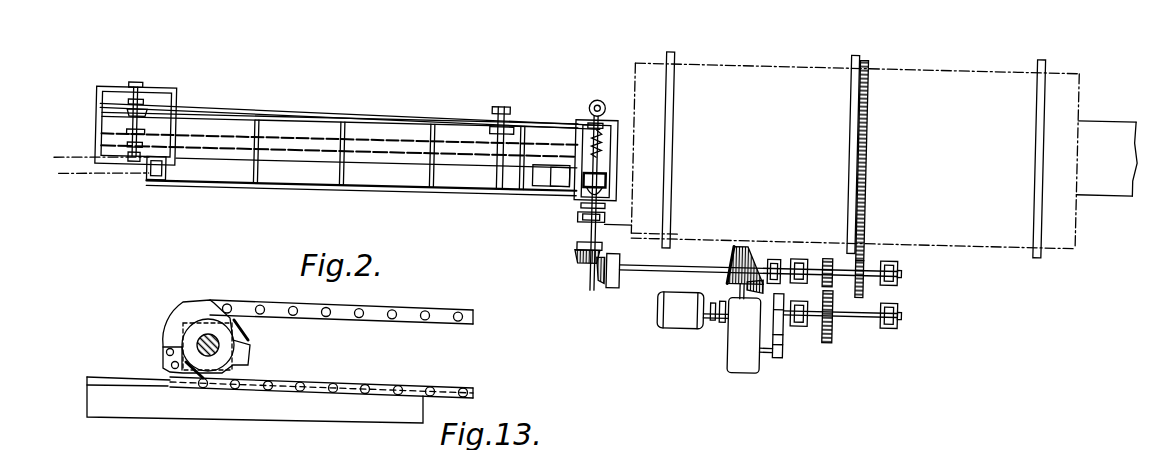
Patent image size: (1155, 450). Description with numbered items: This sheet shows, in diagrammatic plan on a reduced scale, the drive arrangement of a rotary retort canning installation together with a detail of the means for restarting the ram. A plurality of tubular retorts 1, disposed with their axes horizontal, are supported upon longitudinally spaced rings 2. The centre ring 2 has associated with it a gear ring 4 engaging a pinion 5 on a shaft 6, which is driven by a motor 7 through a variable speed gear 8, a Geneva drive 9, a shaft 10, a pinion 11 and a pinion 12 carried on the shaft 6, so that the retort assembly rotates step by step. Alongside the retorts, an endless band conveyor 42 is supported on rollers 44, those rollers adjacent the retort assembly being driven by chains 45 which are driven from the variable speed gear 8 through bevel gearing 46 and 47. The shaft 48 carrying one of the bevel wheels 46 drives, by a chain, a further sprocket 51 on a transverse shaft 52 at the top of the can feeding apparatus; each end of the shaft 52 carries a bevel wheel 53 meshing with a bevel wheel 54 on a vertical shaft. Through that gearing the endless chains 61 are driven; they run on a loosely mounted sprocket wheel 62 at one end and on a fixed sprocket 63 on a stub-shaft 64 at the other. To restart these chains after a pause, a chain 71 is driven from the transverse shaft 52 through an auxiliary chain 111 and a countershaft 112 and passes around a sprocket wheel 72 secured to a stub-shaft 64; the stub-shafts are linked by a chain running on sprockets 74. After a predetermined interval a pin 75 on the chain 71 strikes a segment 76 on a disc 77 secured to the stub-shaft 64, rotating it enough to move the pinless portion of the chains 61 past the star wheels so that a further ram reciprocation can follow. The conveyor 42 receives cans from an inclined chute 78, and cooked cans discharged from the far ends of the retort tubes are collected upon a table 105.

In FIG. 2, the tubular retort 1 is at (737, 61).
In FIG. 2, the ring 2 is at (674, 41).
In FIG. 2, the gear ring 4 is at (868, 45).
In FIG. 2, the pinion 5 is at (867, 271).
In FIG. 2, the shaft 6 is at (848, 254).
In FIG. 2, the motor 7 is at (675, 305).
In FIG. 2, the variable speed gear 8 is at (735, 337).
In FIG. 2, the Geneva drive 9 is at (784, 326).
In FIG. 2, the shaft 10 is at (869, 301).
In FIG. 2, the pinion 11 is at (826, 327).
In FIG. 2, the pinion 12 is at (828, 256).
In FIG. 2, the endless band conveyor 42 is at (305, 167).
In FIG. 2, the roller 44 is at (150, 181).
In FIG. 2, the chain 45 is at (557, 191).
In FIG. 2, the bevel wheel 46 is at (593, 265).
In FIG. 2, the bevel wheel 47 is at (745, 236).
In FIG. 2, the shaft 48 is at (672, 150).
In FIG. 2, the sprocket 51 is at (610, 194).
In FIG. 2, the transverse shaft 52 is at (603, 121).
In FIG. 2, the bevel wheel 53 is at (610, 167).
In FIG. 2, the bevel wheel 54 is at (580, 190).
In FIG. 2, the endless chain 61 is at (382, 138).
In FIG. 2, the sprocket wheel 62 is at (590, 133).
In FIG. 2, the sprocket 63 is at (160, 141).
In FIG. 2, the stub-shaft 64 is at (132, 123).
In FIG. 13, the stub-shaft 64 is at (200, 338).
In FIG. 2, the chain 71 is at (322, 106).
In FIG. 13, the chain 71 is at (441, 313).
In FIG. 2, the sprocket wheel 72 is at (128, 101).
In FIG. 13, the sprocket wheel 72 is at (237, 335).
In FIG. 2, the sprocket 74 is at (132, 118).
In FIG. 2, the pin 75 is at (240, 106).
In FIG. 13, the pin 75 is at (163, 350).
In FIG. 13, the segment 76 is at (190, 300).
In FIG. 2, the disc 77 is at (140, 107).
In FIG. 13, the disc 77 is at (205, 363).
In FIG. 2, the inclined chute 78 is at (77, 167).
In FIG. 2, the table 105 is at (1113, 163).
In FIG. 2, the auxiliary chain 111 is at (552, 114).
In FIG. 2, the countershaft 112 is at (500, 120).